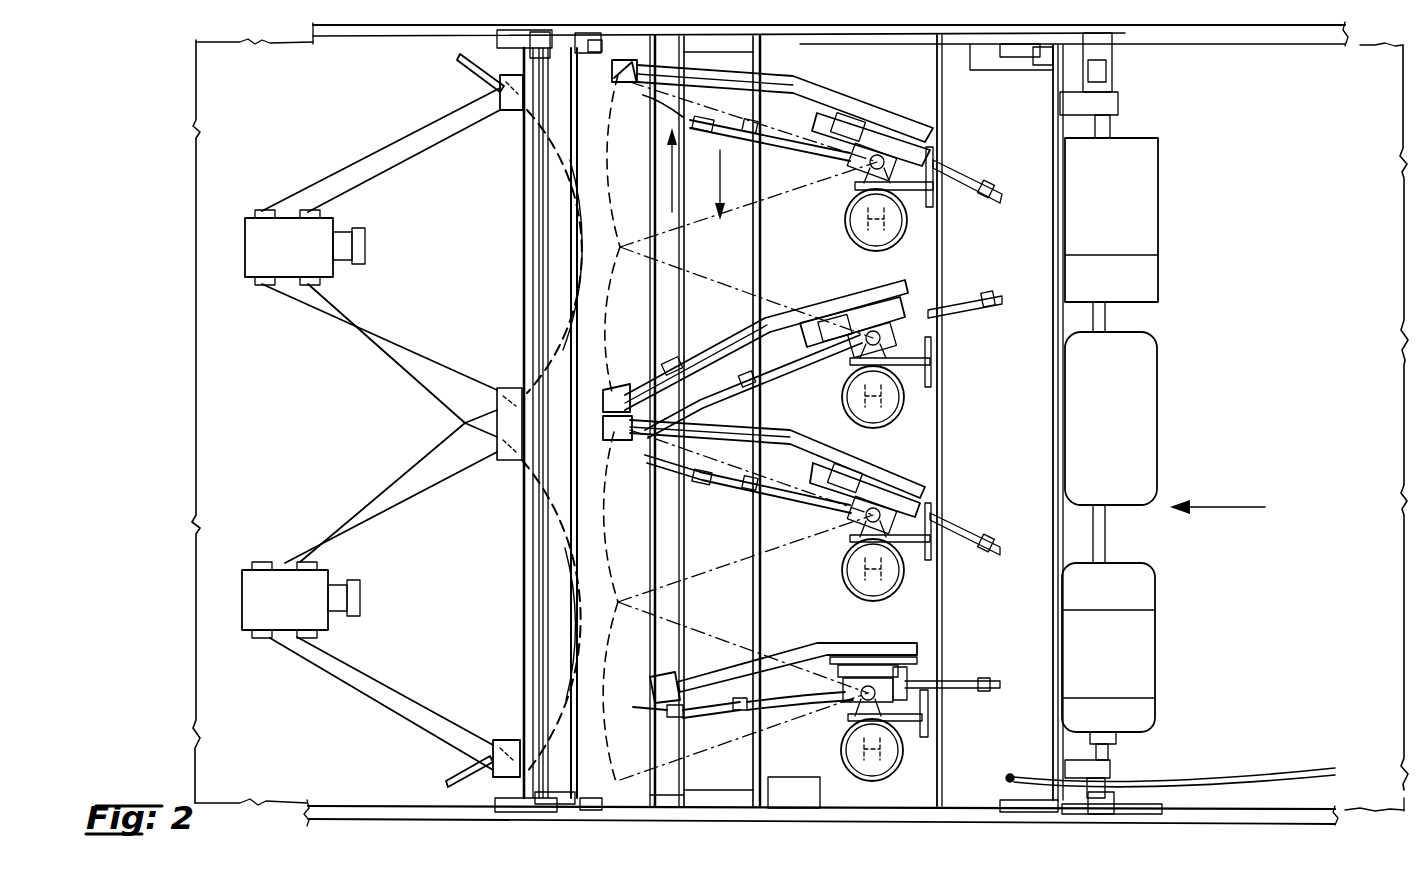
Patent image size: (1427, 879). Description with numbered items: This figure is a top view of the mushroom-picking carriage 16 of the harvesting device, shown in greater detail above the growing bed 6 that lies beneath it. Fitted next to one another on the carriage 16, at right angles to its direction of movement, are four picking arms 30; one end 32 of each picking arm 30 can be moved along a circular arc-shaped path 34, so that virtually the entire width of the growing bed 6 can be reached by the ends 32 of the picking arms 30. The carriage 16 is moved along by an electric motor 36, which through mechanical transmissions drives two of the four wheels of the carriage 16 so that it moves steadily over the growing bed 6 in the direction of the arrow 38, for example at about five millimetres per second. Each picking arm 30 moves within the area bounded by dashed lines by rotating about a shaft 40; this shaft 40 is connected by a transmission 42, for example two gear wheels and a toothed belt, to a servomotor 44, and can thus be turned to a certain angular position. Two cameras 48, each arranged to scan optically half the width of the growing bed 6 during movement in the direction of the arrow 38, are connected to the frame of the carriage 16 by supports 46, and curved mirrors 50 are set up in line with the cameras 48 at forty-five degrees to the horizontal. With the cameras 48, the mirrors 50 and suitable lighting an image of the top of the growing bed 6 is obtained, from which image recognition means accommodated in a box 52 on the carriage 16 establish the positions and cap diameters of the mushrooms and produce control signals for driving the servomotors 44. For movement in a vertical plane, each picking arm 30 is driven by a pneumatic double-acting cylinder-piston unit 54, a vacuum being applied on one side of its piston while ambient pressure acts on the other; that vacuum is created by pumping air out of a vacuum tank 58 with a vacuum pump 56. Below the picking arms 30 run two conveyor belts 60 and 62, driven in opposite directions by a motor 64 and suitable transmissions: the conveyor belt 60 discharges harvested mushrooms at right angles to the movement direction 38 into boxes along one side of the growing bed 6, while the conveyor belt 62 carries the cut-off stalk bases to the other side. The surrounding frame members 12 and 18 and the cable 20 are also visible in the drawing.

The growing bed 6 is at (1226, 366).
The frame 12 is at (800, 446).
The carriage 16 is at (392, 424).
The frame cross member 18 is at (781, 450).
The cable 20 is at (1170, 748).
The picking arm 30 is at (768, 389).
The end of picking arm 32 is at (598, 428).
The circular arc-shaped path 34 is at (569, 441).
The electric motor 36 is at (1151, 680).
The arrow (direction of movement) 38 is at (1217, 494).
The shaft 40 is at (930, 435).
The transmission 42 is at (846, 485).
The servomotor 44 is at (859, 442).
The support 46 is at (392, 420).
The camera 48 is at (337, 437).
The curved mirror 50 is at (487, 423).
The box 52 is at (1004, 452).
The pneumatic double-acting cylinder-piston unit 54 is at (957, 425).
The vacuum pump 56 is at (1152, 167).
The vacuum tank 58 is at (1153, 432).
The conveyor belt 60 is at (713, 453).
The conveyor belt 62 is at (645, 453).
The motor 64 is at (790, 823).